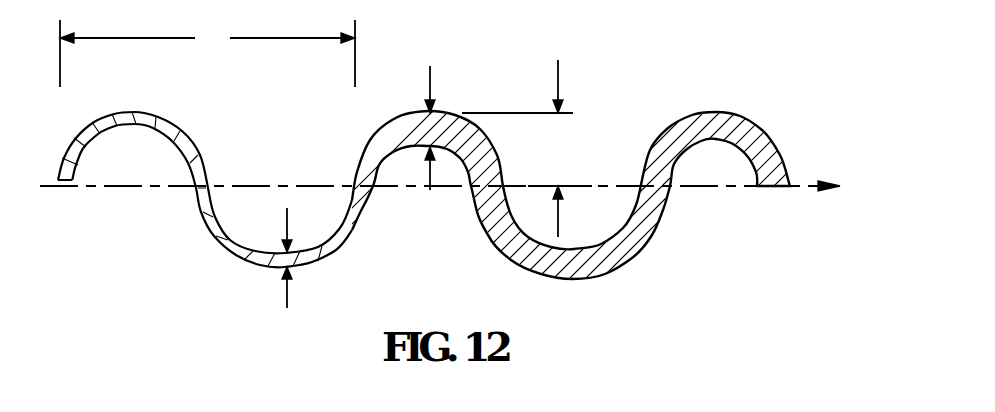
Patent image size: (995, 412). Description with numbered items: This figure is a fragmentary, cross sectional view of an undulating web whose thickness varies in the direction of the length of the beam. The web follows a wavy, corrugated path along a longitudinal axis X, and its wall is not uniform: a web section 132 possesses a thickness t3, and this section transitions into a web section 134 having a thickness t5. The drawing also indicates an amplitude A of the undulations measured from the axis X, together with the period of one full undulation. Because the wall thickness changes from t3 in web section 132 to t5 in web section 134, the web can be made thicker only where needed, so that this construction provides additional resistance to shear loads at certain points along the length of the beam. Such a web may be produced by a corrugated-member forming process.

The web section 132 is at (184, 140).
The web section 134 is at (642, 232).
The longitudinal axis X is at (451, 185).
The corrugation amplitude A is at (527, 148).
The thickness t3 is at (274, 253).
The thickness t5 is at (440, 124).